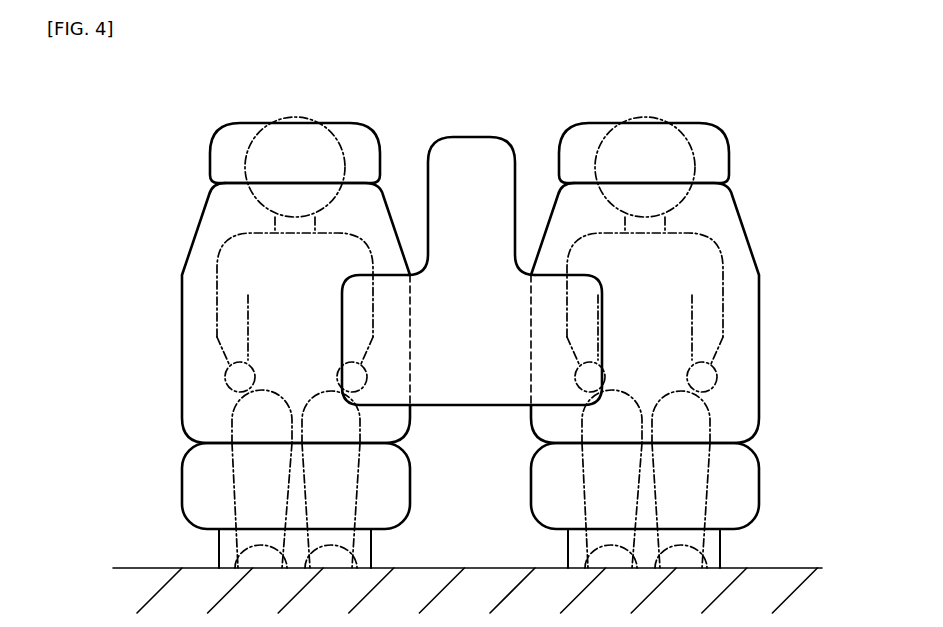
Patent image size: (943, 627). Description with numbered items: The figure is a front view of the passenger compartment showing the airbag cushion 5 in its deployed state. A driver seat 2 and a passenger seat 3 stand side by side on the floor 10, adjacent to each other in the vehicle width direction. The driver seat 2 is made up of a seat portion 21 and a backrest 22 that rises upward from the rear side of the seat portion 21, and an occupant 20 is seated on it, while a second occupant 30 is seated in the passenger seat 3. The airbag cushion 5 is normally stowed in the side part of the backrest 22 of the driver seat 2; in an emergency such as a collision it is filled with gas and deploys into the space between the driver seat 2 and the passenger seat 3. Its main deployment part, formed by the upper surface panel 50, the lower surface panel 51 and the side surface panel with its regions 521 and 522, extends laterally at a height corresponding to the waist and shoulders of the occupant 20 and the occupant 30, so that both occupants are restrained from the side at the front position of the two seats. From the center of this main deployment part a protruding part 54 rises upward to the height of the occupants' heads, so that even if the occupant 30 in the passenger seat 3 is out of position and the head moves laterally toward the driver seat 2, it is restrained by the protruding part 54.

The driver seat 2 is at (261, 345).
The passenger seat 3 is at (677, 342).
The airbag cushion 5 is at (580, 273).
The floor 10 is at (763, 568).
The occupant 20 is at (217, 323).
The seat portion 21 is at (182, 483).
The backrest 22 is at (182, 250).
The occupant 30 is at (758, 256).
The upper surface panel 50 is at (548, 278).
The lower surface panel 51 is at (477, 405).
The protruding part 54 is at (440, 137).
The second side chamber 521 is at (587, 313).
The first side chamber 522 is at (385, 295).